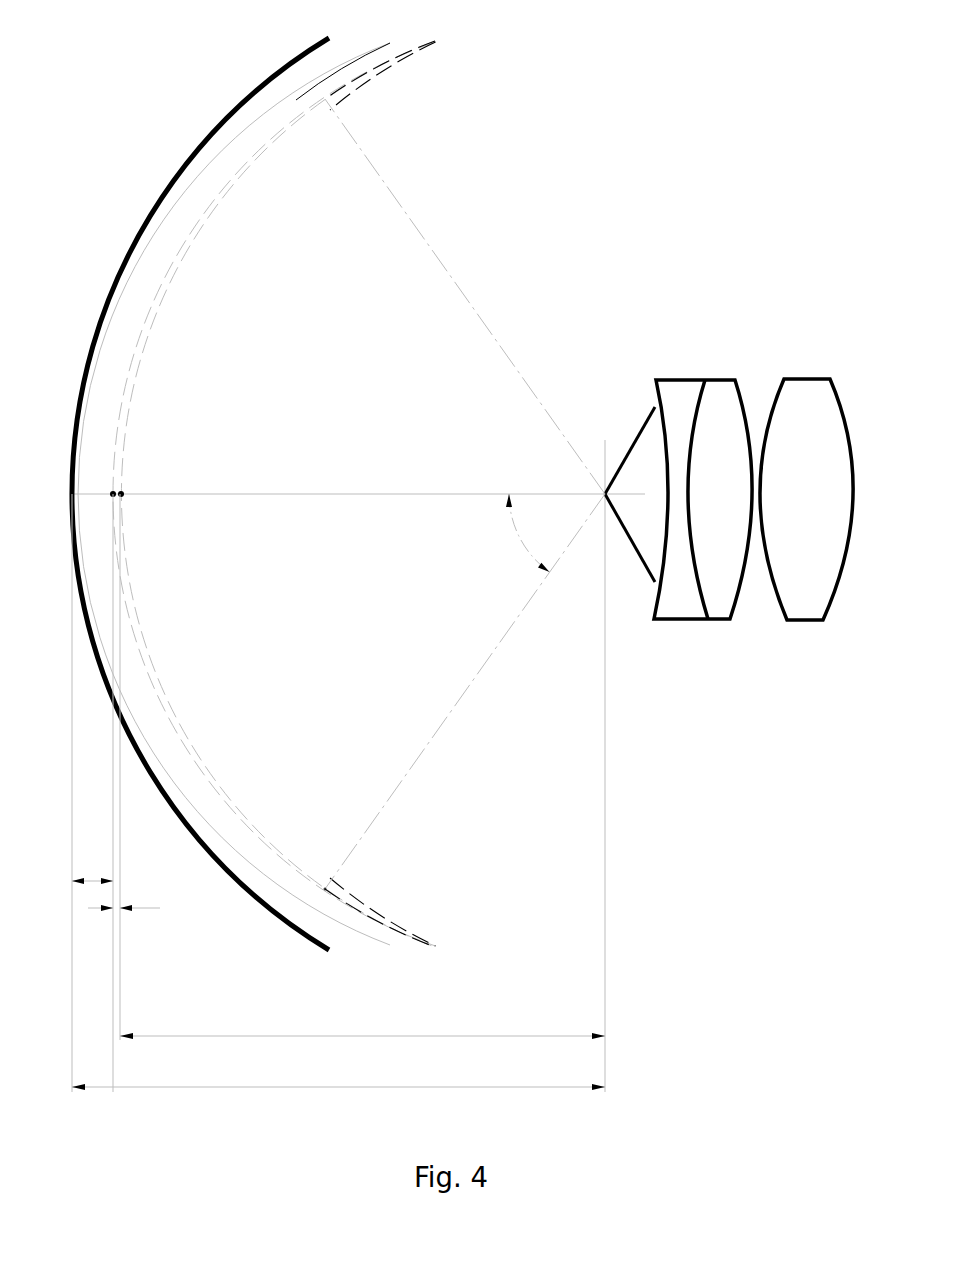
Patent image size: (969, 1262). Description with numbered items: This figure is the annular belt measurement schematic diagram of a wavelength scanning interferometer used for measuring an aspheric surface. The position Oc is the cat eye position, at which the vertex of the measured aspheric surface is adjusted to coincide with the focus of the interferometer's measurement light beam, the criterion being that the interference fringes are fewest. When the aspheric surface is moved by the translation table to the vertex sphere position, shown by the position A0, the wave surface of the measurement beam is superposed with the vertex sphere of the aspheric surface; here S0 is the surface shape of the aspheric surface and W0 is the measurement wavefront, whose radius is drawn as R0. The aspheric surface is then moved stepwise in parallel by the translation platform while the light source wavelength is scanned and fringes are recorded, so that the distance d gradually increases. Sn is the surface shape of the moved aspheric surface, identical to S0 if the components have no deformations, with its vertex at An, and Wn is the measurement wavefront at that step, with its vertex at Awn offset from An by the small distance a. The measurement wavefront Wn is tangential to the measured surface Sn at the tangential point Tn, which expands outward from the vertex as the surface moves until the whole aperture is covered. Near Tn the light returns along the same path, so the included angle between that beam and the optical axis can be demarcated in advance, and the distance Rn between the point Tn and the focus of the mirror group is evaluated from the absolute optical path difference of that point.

The surface shape of the aspheric surface S0 is at (206, 507).
The measurement wavefront W0 is at (246, 508).
The surface shape of the aspheric surface moved in parallel Sn is at (280, 508).
The measurement wavefront Wn is at (302, 507).
The vertex sphere position A0 is at (58, 784).
The vertex position An is at (101, 783).
The vertex of the measurement wavefront Awn is at (145, 758).
The cat eye position Oc is at (630, 749).
The distance between the point Tn and the focus of the mirror group Rn is at (362, 569).
The tangential point Tn is at (346, 891).
The distance d is at (92, 871).
The distance between apices An and Awn a is at (125, 902).
The radius of curvature of reference surface S0 R0 is at (338, 1078).